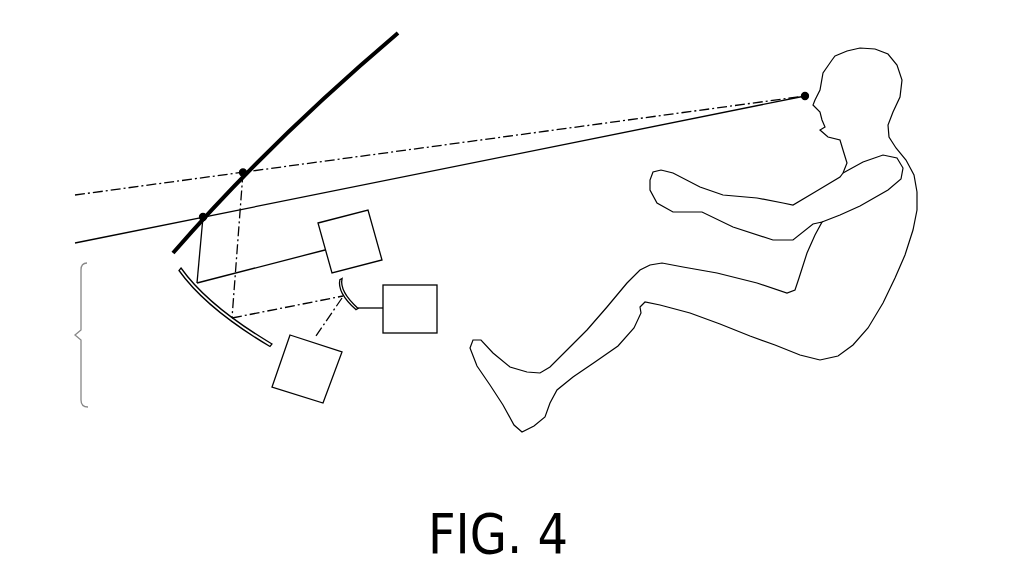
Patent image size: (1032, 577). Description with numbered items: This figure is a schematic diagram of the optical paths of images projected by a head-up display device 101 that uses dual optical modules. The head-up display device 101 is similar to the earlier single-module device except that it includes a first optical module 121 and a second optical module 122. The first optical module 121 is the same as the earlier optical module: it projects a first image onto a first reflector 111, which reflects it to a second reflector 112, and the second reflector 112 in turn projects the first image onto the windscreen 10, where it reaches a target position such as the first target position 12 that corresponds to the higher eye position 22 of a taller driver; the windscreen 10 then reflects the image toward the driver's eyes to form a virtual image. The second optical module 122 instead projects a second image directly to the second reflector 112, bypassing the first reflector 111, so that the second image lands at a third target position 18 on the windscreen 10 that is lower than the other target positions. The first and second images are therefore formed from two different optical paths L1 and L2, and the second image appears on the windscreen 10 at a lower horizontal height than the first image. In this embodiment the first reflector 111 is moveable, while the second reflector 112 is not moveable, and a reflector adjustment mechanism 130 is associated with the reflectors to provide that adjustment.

The windscreen 10 is at (352, 68).
The first target position 12 is at (242, 168).
The third target position 18 is at (200, 216).
The higher eye position 22 is at (806, 92).
The head-up display device 101 is at (60, 335).
The first reflector 111 is at (348, 284).
The second reflector 112 is at (213, 316).
The first optical module 121 is at (330, 380).
The second optical module 122 is at (373, 252).
The reflector adjustment mechanism 130 is at (433, 322).
The optical path L1 is at (254, 311).
The optical path L2 is at (260, 265).